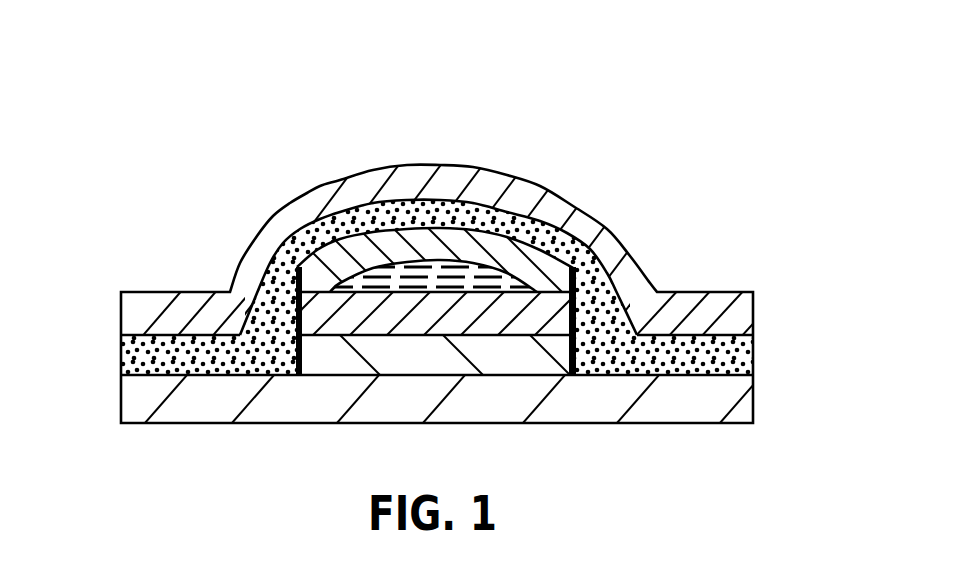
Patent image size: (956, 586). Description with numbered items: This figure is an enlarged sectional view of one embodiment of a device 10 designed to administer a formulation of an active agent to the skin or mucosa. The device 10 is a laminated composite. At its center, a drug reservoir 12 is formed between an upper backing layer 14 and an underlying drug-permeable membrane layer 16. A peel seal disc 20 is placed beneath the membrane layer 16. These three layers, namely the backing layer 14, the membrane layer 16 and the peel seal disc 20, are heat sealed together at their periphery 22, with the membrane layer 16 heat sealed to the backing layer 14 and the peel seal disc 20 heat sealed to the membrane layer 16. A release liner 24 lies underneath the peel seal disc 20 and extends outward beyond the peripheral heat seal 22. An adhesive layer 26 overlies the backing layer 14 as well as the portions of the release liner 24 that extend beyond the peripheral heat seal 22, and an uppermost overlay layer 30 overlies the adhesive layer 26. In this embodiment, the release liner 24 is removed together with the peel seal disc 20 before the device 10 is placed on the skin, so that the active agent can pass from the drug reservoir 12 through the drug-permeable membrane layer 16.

The device 10 is at (288, 143).
The drug reservoir 12 is at (457, 280).
The backing layer 14 is at (550, 323).
The membrane layer 16 is at (543, 355).
The peel seal disc 20 is at (652, 294).
The periphery 22 is at (297, 283).
The release liner 24 is at (745, 398).
The adhesive layer 26 is at (740, 352).
The overlay layer 30 is at (730, 315).